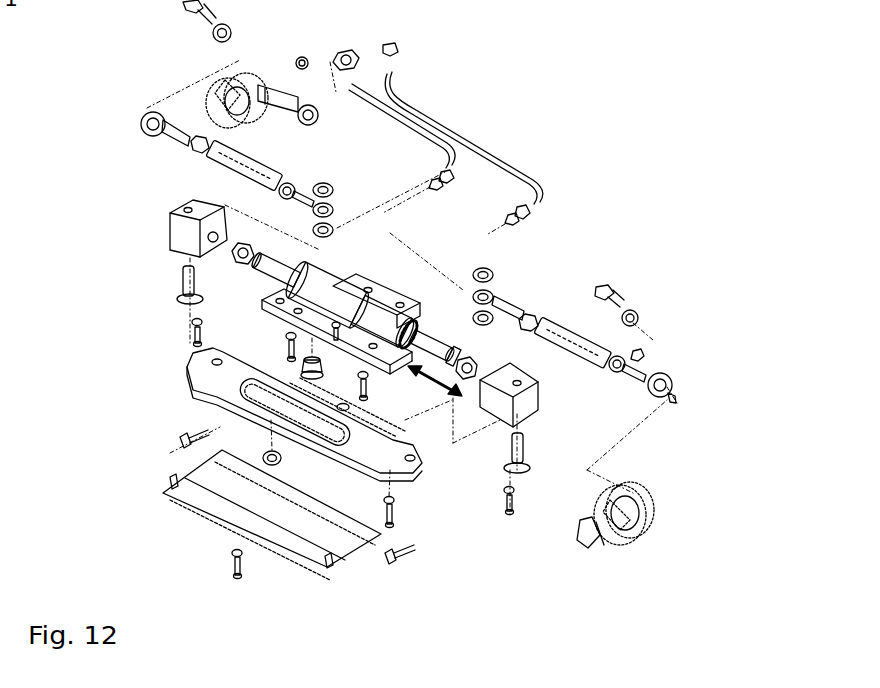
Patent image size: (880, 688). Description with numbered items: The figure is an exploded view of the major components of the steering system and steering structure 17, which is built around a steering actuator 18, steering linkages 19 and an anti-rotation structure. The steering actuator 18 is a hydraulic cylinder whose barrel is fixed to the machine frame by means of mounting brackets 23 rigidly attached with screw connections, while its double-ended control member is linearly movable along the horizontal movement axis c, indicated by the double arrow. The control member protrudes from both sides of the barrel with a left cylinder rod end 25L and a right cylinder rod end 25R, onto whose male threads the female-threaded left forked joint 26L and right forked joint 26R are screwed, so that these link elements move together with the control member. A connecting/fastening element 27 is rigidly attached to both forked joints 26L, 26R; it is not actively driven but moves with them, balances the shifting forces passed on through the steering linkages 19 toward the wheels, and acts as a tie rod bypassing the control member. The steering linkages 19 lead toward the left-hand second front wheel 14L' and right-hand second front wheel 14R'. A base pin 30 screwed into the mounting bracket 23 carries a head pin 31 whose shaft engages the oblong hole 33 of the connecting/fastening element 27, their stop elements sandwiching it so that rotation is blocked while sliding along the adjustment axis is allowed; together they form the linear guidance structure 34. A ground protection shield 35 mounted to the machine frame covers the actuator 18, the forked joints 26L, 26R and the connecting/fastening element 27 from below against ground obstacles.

The left-hand second front wheel 14L' is at (223, 75).
The right-hand second front wheel 14R' is at (594, 555).
The steering system and steering structure 17 is at (622, 158).
The steering actuator 18 is at (297, 278).
The steering linkages 19 is at (238, 169).
The mounting bracket 23 is at (322, 322).
The left cylinder rod end 25L is at (273, 270).
The right cylinder rod end 25R is at (408, 342).
The left forked joint 26L is at (193, 238).
The right forked joint 26R is at (490, 405).
The connecting/fastening element 27 is at (237, 405).
The base pin 30 is at (312, 367).
The head pin 31 is at (268, 453).
The oblong hole 33 is at (343, 407).
The linear guidance structure 34 is at (443, 503).
The ground protection shield 35 is at (242, 513).
The movement axis c is at (438, 394).